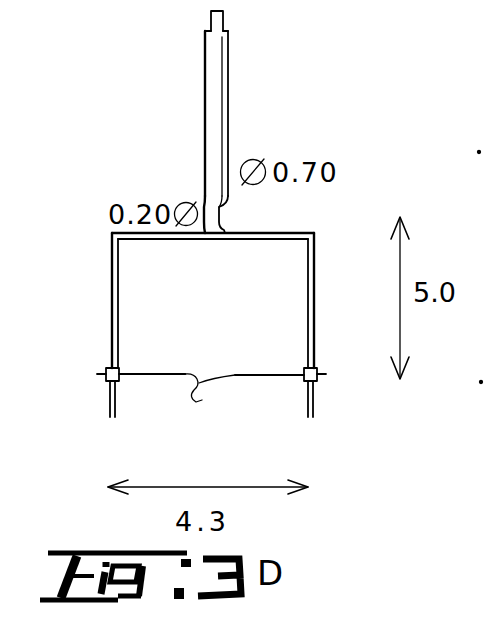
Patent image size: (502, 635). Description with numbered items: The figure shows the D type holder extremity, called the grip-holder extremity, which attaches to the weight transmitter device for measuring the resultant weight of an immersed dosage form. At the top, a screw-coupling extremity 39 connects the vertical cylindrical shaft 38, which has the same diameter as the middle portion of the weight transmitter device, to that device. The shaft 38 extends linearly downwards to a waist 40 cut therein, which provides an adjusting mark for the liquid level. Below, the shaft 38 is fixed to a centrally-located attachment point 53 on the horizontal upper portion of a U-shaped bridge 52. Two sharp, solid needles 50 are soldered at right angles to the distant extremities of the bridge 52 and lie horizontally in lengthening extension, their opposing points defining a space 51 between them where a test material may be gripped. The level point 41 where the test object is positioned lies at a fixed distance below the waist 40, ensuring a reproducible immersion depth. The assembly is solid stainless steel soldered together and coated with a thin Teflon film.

The vertical cylindrical shaft 38 is at (223, 138).
The screw-coupling extremity 39 is at (224, 20).
The waist 40 is at (219, 212).
The level point 41 is at (92, 374).
The needles 50 is at (211, 397).
The space 51 is at (210, 367).
The U-shaped bridge 52 is at (110, 301).
The attachment point 53 is at (213, 241).